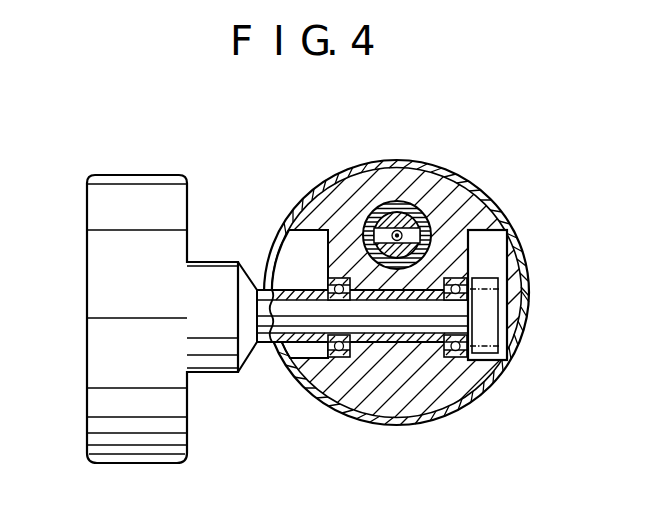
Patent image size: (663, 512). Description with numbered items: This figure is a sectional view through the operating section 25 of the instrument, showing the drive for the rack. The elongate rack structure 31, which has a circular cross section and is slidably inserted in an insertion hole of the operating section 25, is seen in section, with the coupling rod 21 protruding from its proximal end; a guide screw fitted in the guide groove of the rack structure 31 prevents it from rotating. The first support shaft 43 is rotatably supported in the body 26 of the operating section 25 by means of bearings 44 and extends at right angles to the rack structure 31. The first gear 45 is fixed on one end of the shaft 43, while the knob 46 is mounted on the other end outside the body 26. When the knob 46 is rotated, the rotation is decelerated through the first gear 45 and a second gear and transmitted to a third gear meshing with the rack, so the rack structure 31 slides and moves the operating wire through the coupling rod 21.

The coupling rod 21 is at (388, 224).
The operating section 25 is at (536, 332).
The body 26 is at (462, 407).
The rack structure 31 is at (417, 209).
The first support shaft 43 is at (404, 344).
The bearings 44 is at (458, 279).
The first gear 45 is at (492, 328).
The knob 46 is at (92, 295).